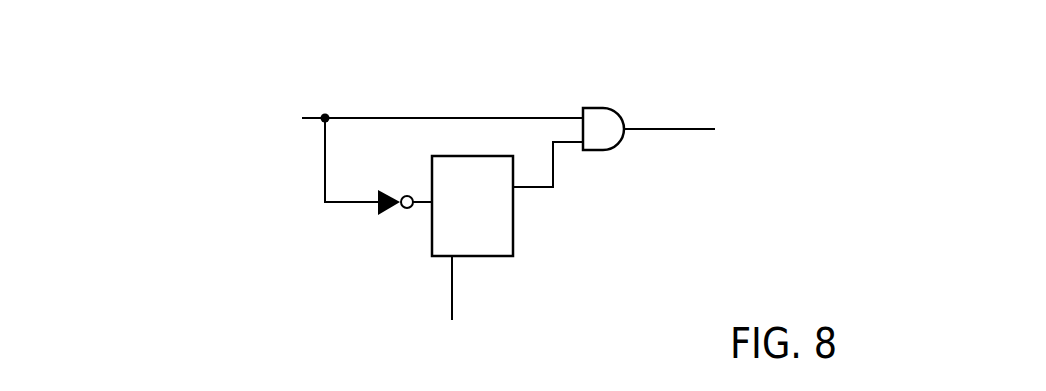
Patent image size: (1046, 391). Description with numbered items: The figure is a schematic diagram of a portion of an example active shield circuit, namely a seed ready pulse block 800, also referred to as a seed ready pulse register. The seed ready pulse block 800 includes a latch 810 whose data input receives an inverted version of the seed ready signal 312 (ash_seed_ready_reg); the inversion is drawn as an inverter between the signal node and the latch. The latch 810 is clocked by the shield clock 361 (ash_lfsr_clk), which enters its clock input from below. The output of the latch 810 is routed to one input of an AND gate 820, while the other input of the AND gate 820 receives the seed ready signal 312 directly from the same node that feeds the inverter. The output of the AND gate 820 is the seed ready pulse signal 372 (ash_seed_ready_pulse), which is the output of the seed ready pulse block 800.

The seed ready pulse block 800 is at (178, 48).
The seed ready signal 312 is at (202, 142).
The latch 810 is at (513, 237).
The shield clock 361 is at (417, 327).
The AND gate 820 is at (595, 108).
The seed ready pulse signal 372 is at (770, 108).